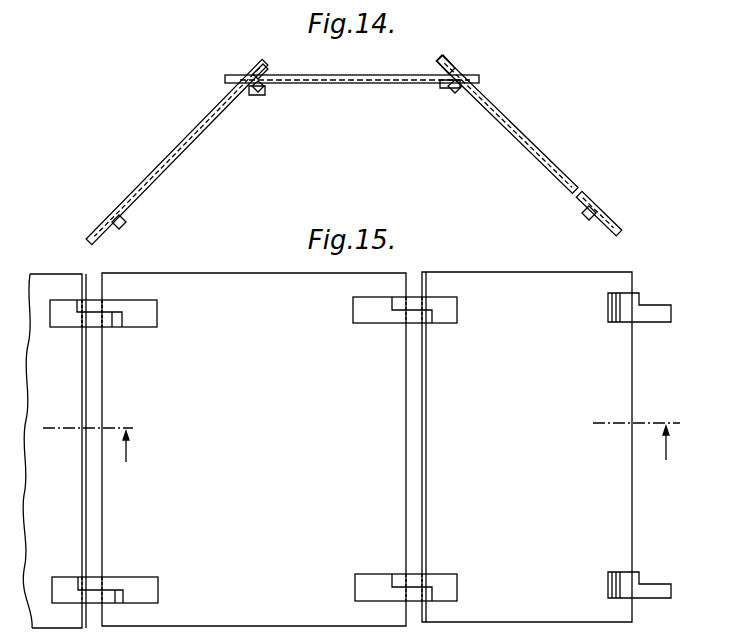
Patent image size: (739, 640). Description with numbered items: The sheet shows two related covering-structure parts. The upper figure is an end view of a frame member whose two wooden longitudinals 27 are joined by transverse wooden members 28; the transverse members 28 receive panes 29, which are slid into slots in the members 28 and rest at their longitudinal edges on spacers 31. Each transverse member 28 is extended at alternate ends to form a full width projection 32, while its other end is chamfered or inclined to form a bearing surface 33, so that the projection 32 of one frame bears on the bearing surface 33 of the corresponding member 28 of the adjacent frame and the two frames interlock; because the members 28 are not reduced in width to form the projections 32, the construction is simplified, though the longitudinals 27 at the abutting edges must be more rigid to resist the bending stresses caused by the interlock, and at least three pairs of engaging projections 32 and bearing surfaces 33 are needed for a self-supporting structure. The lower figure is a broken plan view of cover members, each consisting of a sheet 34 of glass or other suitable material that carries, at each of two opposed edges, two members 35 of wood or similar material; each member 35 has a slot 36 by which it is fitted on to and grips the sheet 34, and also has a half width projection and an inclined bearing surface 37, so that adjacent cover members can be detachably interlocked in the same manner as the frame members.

In FIG. 14, the wooden longitudinal 27 is at (262, 94).
In FIG. 14, the transverse wooden member 28 is at (329, 73).
In FIG. 14, the pane 29 is at (161, 165).
In FIG. 14, the spacer 31 is at (118, 216).
In FIG. 14, the full width projection 32 is at (441, 63).
In FIG. 14, the bearing surface 33 is at (260, 80).
In FIG. 15, the sheet 34 is at (655, 521).
In FIG. 15, the member 35 is at (147, 317).
In FIG. 15, the slot 36 is at (104, 318).
In FIG. 15, the inclined bearing surface 37 is at (643, 578).